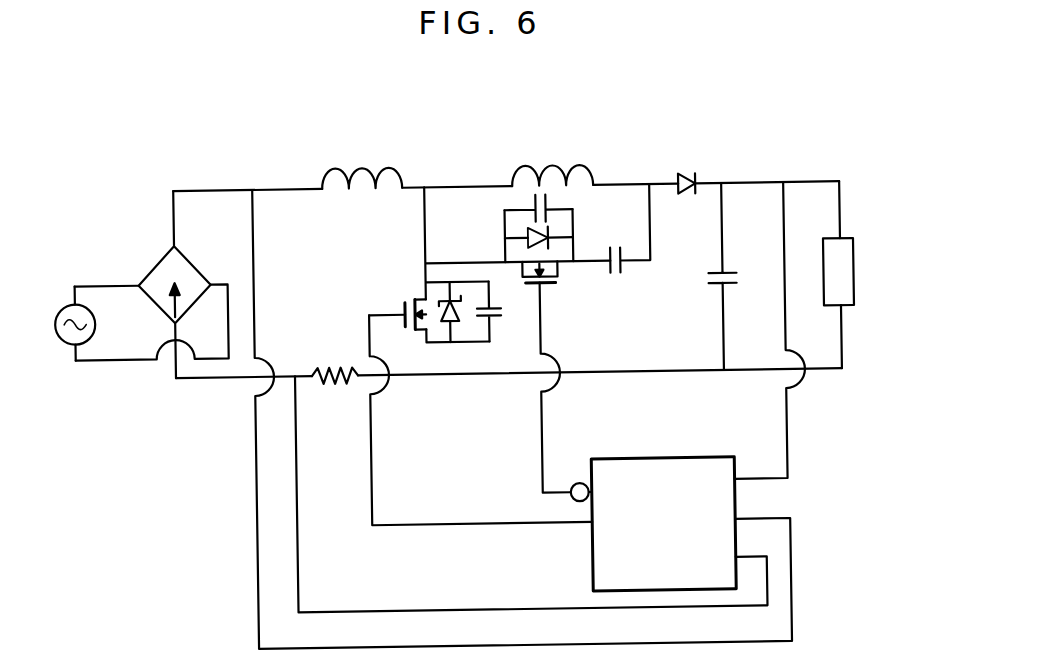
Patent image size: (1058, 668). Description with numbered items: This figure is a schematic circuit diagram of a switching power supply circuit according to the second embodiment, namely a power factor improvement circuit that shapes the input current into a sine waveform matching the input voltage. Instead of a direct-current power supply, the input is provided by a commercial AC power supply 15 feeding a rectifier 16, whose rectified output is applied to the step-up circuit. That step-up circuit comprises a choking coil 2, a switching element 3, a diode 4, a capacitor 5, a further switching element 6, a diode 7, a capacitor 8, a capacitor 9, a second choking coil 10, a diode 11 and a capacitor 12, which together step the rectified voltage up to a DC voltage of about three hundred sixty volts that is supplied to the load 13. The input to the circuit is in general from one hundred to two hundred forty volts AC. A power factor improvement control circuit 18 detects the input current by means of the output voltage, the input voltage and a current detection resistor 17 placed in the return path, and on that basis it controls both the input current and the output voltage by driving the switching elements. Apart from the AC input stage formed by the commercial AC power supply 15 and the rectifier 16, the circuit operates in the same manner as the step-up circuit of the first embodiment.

The choking coil 2 is at (364, 163).
The switching element 3 is at (406, 297).
The diode 4 is at (443, 347).
The capacitor 5 is at (488, 348).
The switching element 6 is at (558, 282).
The diode 7 is at (555, 236).
The capacitor 8 is at (555, 203).
The capacitor 9 is at (626, 283).
The choking coil 10 is at (544, 165).
The diode 11 is at (703, 182).
The capacitor 12 is at (732, 269).
The load 13 is at (852, 241).
The commercial AC power supply 15 is at (77, 269).
The rectifier 16 is at (199, 255).
The current detection resistor 17 is at (332, 366).
The power factor improvement control circuit 18 is at (650, 460).